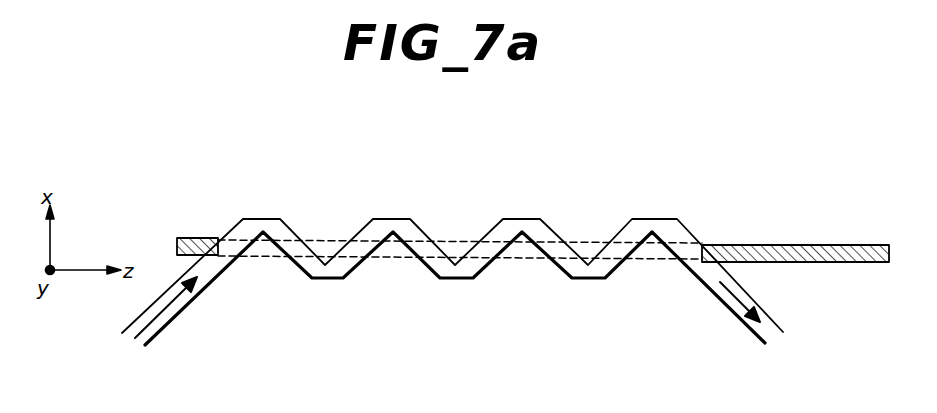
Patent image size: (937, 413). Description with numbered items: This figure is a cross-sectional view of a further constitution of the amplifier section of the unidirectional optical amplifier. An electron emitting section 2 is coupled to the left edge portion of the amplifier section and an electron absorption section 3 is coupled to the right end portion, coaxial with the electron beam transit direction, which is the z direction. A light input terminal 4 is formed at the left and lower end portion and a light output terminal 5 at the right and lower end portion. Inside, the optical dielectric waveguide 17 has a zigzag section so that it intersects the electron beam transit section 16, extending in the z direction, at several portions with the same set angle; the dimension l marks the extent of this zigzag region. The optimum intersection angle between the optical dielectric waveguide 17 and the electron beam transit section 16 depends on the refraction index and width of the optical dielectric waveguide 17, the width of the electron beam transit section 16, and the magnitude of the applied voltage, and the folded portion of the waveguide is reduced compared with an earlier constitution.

The electron emitting section 2 is at (187, 238).
The electron absorption section 3 is at (795, 245).
The light input terminal 4 is at (135, 342).
The light output terminal 5 is at (770, 325).
The electron beam transit section 16 is at (393, 257).
The optical dielectric waveguide 17 is at (472, 270).
The length of corrugated section l is at (205, 230).